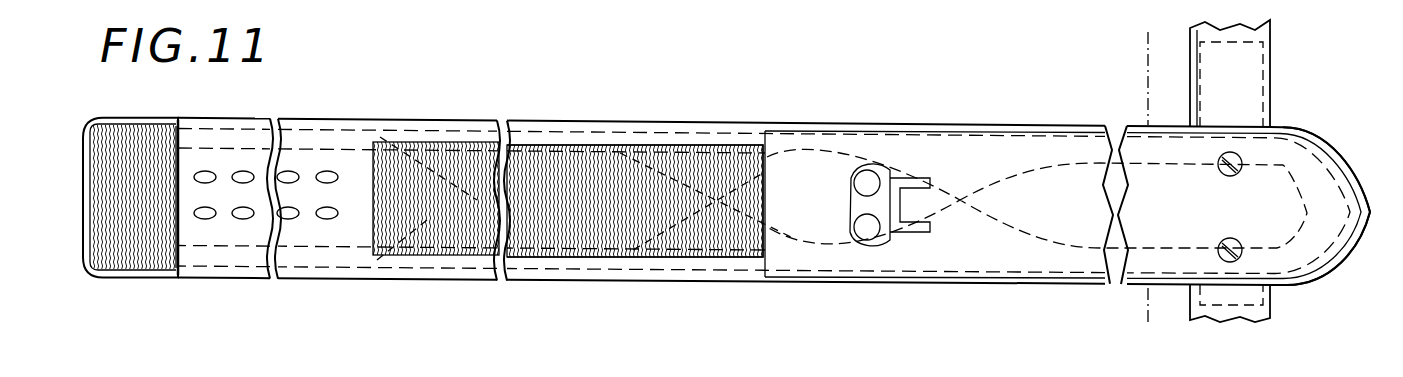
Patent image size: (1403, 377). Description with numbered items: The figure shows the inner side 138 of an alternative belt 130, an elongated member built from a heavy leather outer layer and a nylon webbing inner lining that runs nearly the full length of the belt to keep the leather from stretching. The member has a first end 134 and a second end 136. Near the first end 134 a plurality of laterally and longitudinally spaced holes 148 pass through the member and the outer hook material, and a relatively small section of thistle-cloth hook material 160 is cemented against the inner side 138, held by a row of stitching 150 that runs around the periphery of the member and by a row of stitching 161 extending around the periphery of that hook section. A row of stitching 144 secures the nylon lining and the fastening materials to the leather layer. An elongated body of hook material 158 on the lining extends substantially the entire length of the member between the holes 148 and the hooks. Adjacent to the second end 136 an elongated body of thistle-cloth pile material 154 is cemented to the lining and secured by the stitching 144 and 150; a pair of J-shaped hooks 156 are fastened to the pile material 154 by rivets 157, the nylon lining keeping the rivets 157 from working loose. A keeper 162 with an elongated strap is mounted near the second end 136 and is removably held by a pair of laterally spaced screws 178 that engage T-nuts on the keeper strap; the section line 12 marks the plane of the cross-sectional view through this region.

The section line 12 is at (1170, 32).
The belt 130 is at (522, 80).
The first end 134 is at (85, 133).
The second end 136 is at (1348, 162).
The inner side 138 is at (323, 138).
The row of stitching 144 is at (603, 150).
The holes 148 is at (243, 220).
The row of stitching 150 is at (413, 130).
The pile material 154 is at (1277, 200).
The J-shaped hooks 156 is at (913, 185).
The rivets 157 is at (860, 231).
The hook material 158 is at (580, 167).
The hook material 160 is at (160, 128).
The row of stitching 161 is at (170, 267).
The keeper 162 is at (1282, 118).
The screws 178 is at (1300, 280).